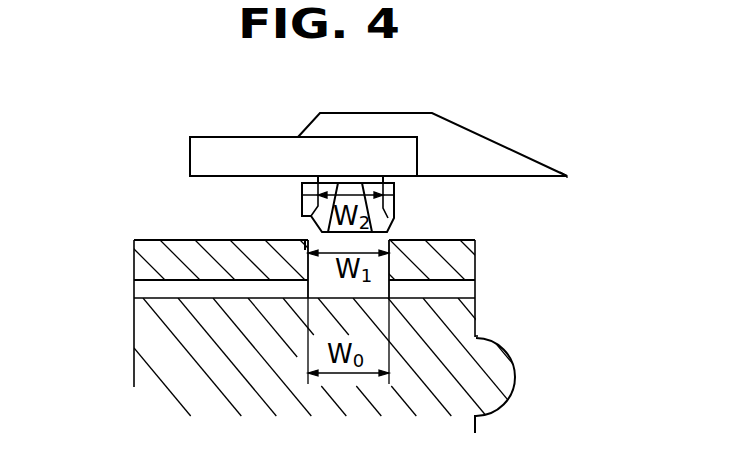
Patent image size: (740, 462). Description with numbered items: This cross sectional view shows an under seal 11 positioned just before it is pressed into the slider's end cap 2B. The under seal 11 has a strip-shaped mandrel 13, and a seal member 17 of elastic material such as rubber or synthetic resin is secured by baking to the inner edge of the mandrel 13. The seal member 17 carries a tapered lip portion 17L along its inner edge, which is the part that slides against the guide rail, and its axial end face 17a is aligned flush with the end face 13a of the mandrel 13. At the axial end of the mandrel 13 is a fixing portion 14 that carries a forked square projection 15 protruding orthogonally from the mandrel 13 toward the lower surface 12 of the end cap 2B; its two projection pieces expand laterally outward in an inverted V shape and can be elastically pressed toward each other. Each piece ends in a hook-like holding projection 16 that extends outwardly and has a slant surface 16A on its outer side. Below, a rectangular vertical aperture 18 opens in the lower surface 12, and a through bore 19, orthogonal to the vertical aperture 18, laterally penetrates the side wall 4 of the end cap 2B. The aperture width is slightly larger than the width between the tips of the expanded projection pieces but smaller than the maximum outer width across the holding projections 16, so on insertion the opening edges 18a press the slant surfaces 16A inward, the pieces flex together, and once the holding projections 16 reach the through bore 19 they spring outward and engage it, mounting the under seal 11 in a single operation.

The under seal 11 is at (403, 144).
The mandrel 13 is at (200, 139).
The end face of the mandrel 13a is at (407, 153).
The seal member 17 is at (476, 145).
The axial end face of the seal member 17a is at (467, 150).
The lip portion 17L is at (567, 177).
The fixing portion 14 is at (280, 200).
The square projection 15 is at (327, 183).
The holding projection 16 is at (394, 214).
The slant surface 16A is at (394, 222).
The lower surface 12 is at (175, 240).
The vertical aperture 18 is at (372, 269).
The opening edge 18a is at (305, 240).
The through bore 19 is at (465, 288).
The end cap 2B is at (134, 308).
The side wall 4 is at (157, 345).